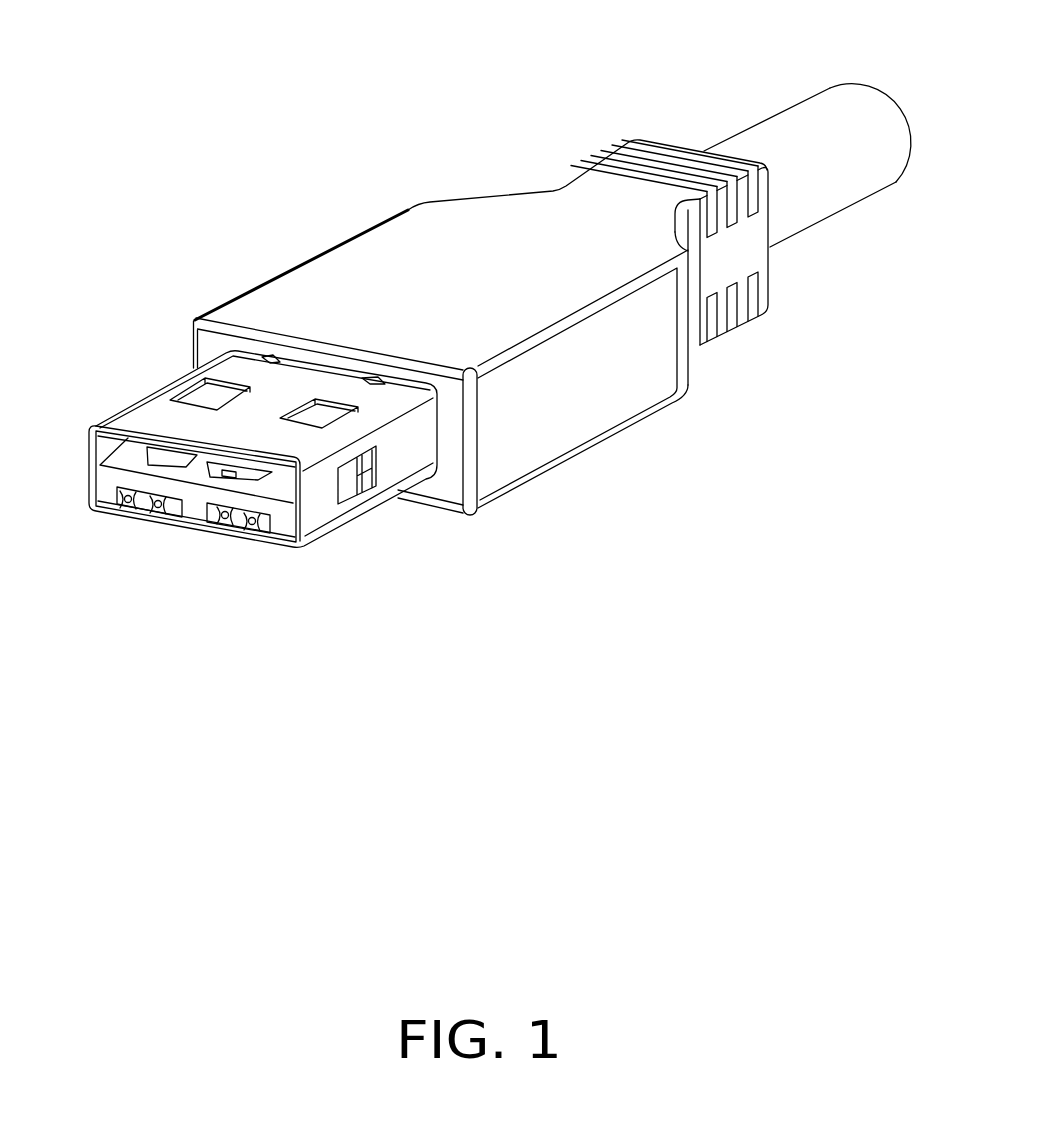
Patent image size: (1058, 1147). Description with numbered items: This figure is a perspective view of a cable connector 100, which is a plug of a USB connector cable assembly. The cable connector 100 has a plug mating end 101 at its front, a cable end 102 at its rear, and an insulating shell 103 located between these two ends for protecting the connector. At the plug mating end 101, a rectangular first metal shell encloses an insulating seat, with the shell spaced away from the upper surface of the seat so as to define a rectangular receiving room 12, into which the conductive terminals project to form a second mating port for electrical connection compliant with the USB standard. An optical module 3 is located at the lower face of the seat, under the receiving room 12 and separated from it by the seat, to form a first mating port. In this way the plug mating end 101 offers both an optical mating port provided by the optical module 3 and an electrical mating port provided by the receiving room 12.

The cable connector 100 is at (300, 222).
The plug mating end 101 is at (153, 410).
The cable end 102 is at (822, 135).
The insulating shell 103 is at (515, 223).
The optical module 3 is at (107, 492).
The receiving room 12 is at (257, 483).